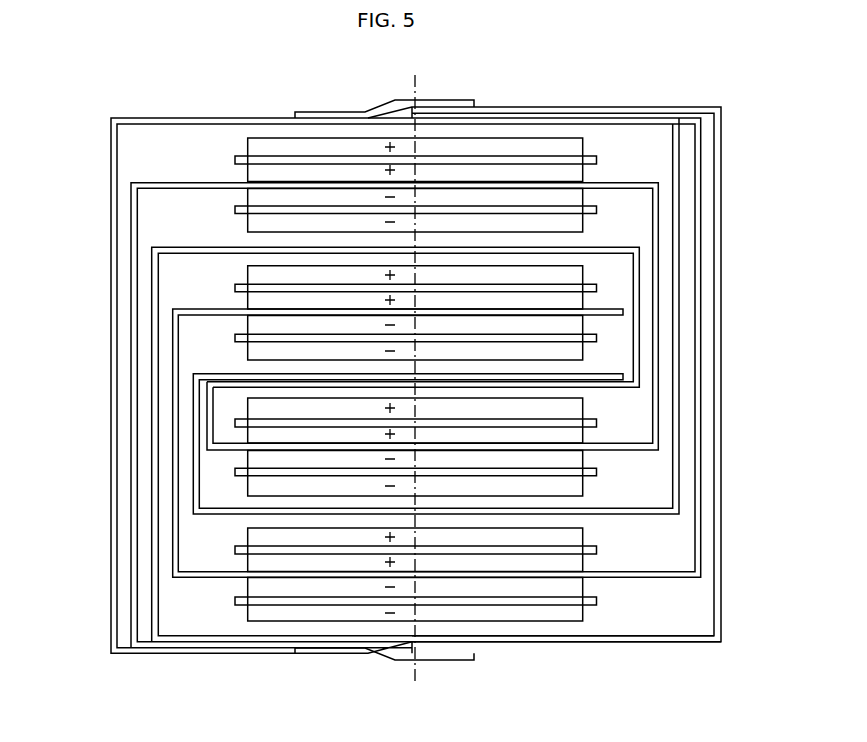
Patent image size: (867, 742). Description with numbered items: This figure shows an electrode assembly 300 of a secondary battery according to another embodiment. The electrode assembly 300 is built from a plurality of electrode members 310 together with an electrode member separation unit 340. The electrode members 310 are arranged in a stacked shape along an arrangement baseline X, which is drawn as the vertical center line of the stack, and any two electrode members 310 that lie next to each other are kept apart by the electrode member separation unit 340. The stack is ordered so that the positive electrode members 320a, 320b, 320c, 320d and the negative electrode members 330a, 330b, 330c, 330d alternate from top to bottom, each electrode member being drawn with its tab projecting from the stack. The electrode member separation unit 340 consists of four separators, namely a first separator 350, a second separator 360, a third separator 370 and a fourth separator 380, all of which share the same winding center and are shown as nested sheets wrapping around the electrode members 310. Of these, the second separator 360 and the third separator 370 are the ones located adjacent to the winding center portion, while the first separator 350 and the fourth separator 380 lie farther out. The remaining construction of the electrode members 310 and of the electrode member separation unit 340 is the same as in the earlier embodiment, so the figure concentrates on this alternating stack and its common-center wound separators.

The electrode assembly 300 is at (70, 66).
The electrode members 310 is at (48, 583).
The positive electrode member 320a is at (246, 146).
The positive electrode member 320b is at (246, 276).
The positive electrode member 320c is at (246, 409).
The positive electrode member 320d is at (246, 535).
The negative electrode member 330a is at (246, 200).
The negative electrode member 330b is at (246, 351).
The negative electrode member 330c is at (246, 457).
The negative electrode member 330d is at (246, 586).
The electrode member separation unit 340 is at (721, 190).
The first separator 350 is at (618, 312).
The second separator 360 is at (622, 375).
The third separator 370 is at (618, 386).
The fourth separator 380 is at (630, 452).